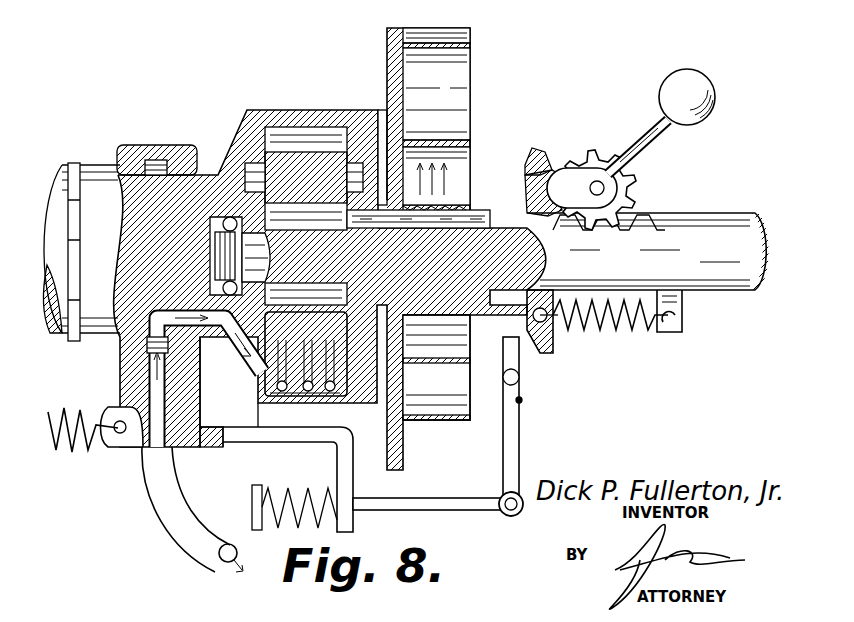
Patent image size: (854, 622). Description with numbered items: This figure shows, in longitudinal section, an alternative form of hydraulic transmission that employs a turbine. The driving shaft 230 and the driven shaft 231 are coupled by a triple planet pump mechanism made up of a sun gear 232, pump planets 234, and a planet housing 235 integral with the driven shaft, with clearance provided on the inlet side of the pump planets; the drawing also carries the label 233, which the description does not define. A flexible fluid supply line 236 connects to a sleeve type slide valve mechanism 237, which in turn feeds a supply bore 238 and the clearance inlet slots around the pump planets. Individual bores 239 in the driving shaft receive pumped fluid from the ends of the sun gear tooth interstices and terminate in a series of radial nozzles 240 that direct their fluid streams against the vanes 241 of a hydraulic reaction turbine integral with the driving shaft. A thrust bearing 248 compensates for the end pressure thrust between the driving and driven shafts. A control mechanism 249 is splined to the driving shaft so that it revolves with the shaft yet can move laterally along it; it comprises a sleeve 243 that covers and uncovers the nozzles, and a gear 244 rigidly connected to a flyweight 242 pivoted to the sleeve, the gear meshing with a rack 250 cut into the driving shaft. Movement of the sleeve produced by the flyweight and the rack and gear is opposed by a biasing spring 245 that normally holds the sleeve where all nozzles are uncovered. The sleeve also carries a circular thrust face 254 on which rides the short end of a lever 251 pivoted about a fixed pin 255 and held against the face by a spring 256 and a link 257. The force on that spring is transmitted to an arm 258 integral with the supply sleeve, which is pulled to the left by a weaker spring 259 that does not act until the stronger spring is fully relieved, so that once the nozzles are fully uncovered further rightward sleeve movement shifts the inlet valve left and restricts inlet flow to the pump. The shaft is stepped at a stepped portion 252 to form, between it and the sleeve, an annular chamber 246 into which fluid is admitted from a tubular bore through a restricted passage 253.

The driving shaft 230 is at (737, 233).
The driven shaft 231 is at (47, 213).
The sun gear 232 is at (222, 172).
The solenoid frame 233 is at (392, 30).
The pump planets 234 is at (283, 160).
The planet housing 235 is at (288, 163).
The flexible fluid supply line 236 is at (170, 503).
The sleeve type slide valve mechanism 237 is at (133, 393).
The supply bore 238 is at (113, 341).
The individual bores 239 is at (381, 195).
The radial nozzles 240 is at (420, 212).
The vanes 241 is at (427, 140).
The flyweight 242 is at (687, 90).
The sleeve 243 is at (520, 353).
The gear 244 is at (633, 187).
The biasing spring 245 is at (607, 332).
The annular chamber 246 is at (592, 332).
The thrust bearing 248 is at (213, 173).
The control mechanism 249 is at (551, 168).
The rack 250 is at (638, 220).
The lever 251 is at (513, 455).
The stepped portion 252 is at (550, 347).
The restricted passage 253 is at (548, 165).
The circular thrust face 254 is at (526, 145).
The fixed pin 255 is at (519, 400).
The spring 256 is at (334, 500).
The link 257 is at (477, 505).
The arm 258 is at (277, 437).
The spring 259 is at (50, 443).